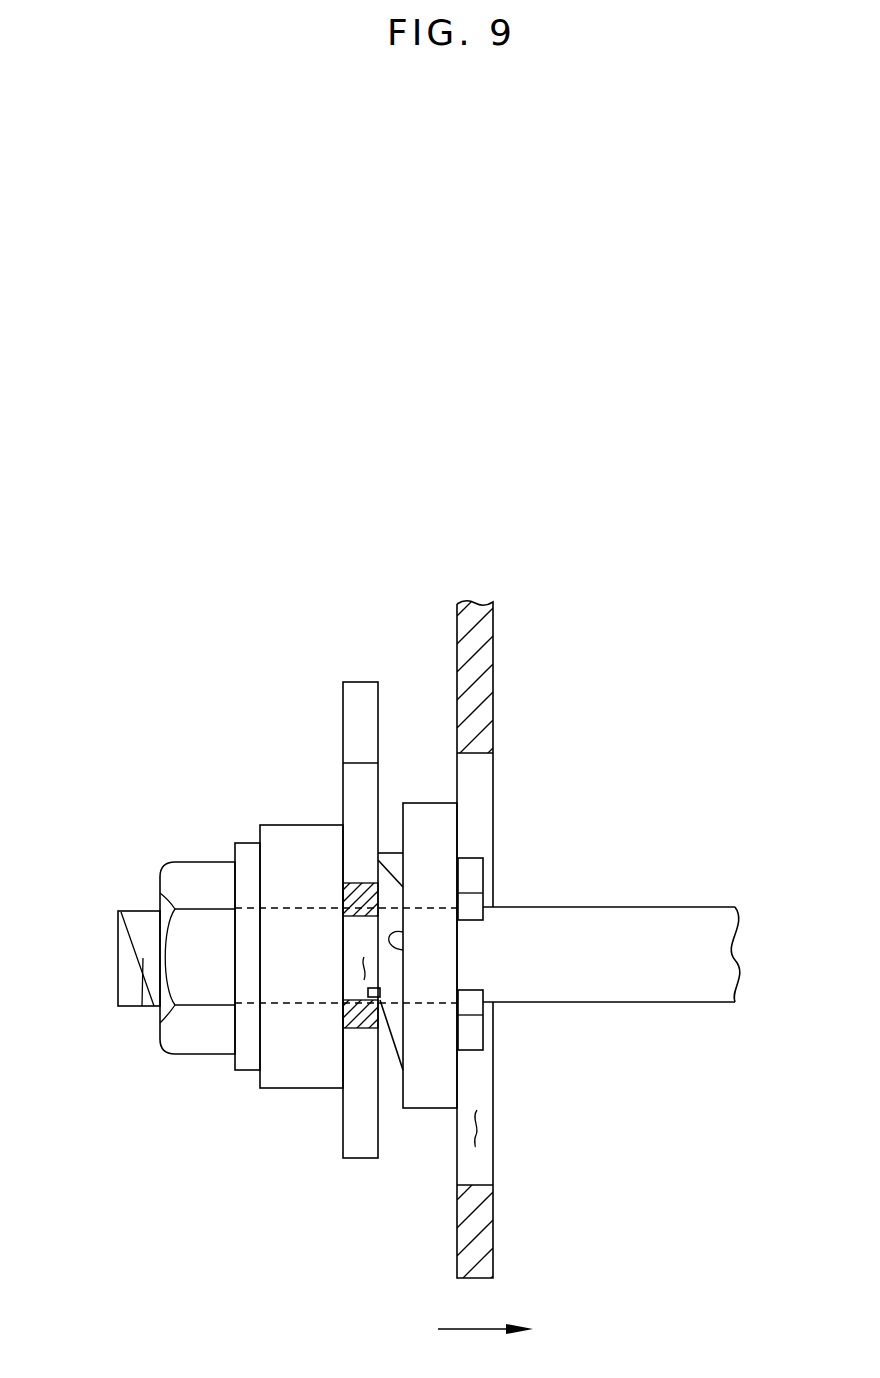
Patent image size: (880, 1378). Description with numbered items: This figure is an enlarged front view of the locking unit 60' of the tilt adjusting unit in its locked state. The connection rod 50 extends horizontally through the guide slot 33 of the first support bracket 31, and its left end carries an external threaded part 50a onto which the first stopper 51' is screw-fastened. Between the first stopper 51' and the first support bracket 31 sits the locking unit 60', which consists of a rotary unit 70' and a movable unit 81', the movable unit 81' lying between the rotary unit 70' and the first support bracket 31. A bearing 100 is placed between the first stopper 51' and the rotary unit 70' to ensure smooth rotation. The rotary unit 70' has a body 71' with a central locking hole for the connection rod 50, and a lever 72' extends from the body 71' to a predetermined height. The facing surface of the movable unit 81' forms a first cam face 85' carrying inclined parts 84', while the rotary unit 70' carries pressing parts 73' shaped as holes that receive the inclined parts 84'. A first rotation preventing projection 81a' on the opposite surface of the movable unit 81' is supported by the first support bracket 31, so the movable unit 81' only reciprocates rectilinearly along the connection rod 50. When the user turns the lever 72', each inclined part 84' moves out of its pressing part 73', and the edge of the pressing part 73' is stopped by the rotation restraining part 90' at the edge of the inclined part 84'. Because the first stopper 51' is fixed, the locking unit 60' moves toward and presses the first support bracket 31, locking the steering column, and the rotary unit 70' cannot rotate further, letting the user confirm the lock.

The first support bracket 31 is at (483, 677).
The guide slot 33 is at (480, 1130).
The connection rod 50 is at (643, 1000).
The external threaded part 50a is at (128, 1005).
The first stopper 51' is at (176, 1018).
The locking unit 60' is at (248, 1106).
The rotary unit 70' is at (291, 920).
The body 71' is at (342, 1068).
The lever 72' is at (300, 688).
The pressing part 73' is at (476, 952).
The movable unit 81' is at (429, 1051).
The first rotation preventing projection 81a' is at (538, 909).
The inclined part 84' is at (481, 1052).
The first cam face 85' is at (498, 902).
The rotation restraining part 90' is at (276, 898).
The bearing 100 is at (287, 1090).